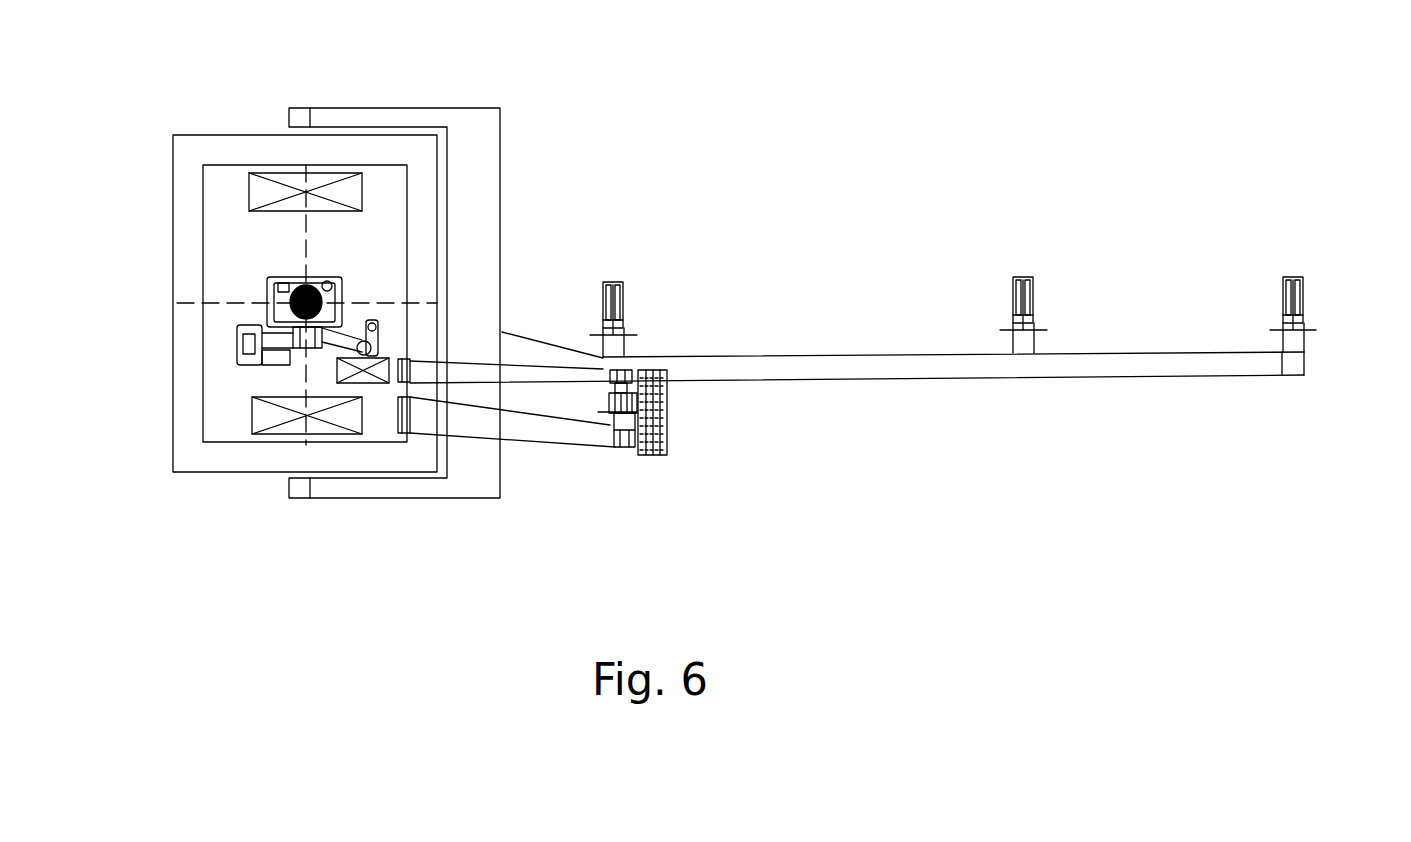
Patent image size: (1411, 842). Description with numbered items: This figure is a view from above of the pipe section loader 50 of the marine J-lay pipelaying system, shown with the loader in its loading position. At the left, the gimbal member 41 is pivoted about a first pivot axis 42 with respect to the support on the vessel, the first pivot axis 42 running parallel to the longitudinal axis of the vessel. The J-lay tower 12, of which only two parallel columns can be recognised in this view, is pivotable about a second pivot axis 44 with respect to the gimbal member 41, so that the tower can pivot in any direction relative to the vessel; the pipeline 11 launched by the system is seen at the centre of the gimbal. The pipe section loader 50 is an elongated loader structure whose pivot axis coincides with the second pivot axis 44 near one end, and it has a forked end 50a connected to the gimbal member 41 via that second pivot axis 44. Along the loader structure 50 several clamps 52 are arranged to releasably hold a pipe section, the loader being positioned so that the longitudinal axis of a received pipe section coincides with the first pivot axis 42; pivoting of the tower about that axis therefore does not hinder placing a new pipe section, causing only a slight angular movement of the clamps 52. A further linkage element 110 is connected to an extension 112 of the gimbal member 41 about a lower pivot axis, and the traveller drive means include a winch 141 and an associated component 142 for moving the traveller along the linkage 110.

The offshore pipeline 11 is at (263, 317).
The J-lay tower 12 is at (272, 190).
The gimbal member 41 is at (188, 193).
The first pivot axis 42 is at (220, 303).
The second pivot axis 44 is at (312, 453).
The pipe section loader 50 is at (949, 366).
The forked end 50a is at (382, 488).
The clamps 52 is at (628, 300).
The further linkage element 110 is at (618, 418).
The extension of the gimbal member 112 is at (557, 435).
The winch 141 is at (665, 437).
The coupling 142 is at (665, 395).